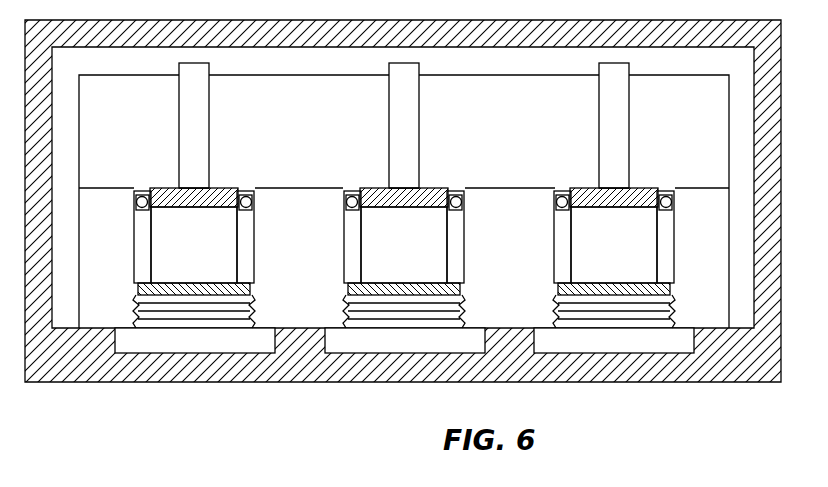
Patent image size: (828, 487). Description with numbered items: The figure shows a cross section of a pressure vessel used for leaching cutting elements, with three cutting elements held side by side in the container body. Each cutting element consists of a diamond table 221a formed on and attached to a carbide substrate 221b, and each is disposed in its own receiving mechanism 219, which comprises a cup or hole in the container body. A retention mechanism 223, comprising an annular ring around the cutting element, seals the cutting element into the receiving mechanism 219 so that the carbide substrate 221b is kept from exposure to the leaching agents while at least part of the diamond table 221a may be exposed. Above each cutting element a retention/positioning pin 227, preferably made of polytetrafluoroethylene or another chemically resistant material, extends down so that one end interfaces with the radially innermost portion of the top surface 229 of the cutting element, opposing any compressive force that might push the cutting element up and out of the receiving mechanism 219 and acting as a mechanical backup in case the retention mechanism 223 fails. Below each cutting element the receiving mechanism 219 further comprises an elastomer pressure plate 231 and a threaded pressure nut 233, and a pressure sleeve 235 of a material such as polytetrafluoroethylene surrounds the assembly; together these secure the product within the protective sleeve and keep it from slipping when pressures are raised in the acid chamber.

The receiving mechanism 219 is at (134, 260).
The diamond table 221a is at (172, 188).
The carbide substrate 221b is at (223, 254).
The retention mechanism 223 is at (674, 200).
The retention/positioning pin 227 is at (185, 122).
The top surface 229 is at (197, 188).
The elastomer pressure plate 231 is at (372, 297).
The threaded pressure nut 233 is at (608, 351).
The pressure sleeve 235 is at (675, 252).